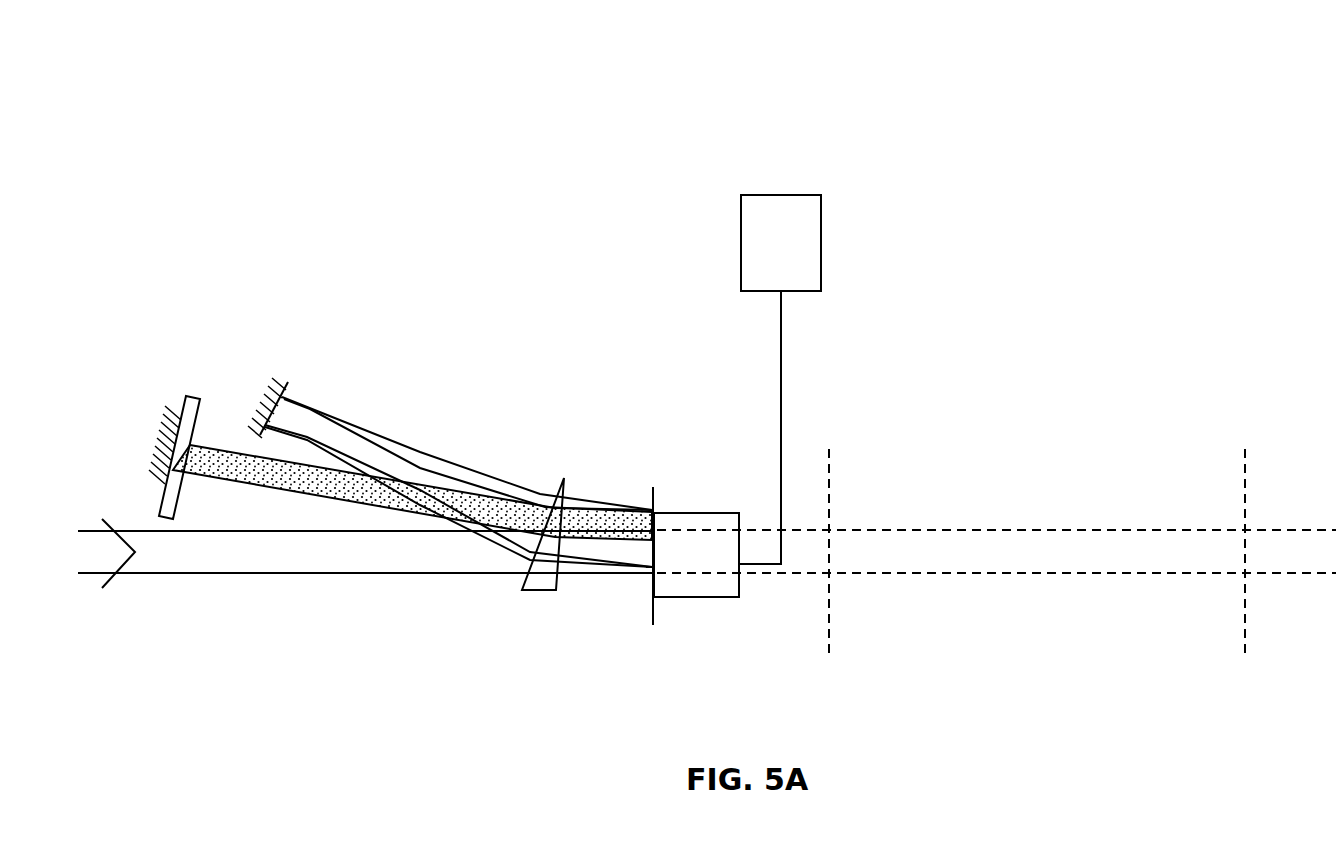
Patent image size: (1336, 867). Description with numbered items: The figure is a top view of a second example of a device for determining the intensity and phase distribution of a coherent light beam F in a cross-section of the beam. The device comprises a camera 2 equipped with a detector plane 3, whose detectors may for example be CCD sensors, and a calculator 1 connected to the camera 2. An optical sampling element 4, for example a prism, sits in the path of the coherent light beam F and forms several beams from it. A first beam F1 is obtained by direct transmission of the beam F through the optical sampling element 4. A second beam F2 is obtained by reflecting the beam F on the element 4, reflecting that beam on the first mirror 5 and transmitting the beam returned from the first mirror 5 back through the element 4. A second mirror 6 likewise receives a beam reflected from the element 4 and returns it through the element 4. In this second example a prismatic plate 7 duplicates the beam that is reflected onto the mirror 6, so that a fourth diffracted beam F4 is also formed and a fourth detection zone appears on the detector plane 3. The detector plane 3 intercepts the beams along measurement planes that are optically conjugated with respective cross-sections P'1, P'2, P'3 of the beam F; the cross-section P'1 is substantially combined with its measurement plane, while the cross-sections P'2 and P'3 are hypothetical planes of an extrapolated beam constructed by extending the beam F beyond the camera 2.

The calculator 1 is at (821, 242).
The camera 2 is at (688, 597).
The detector plane 3 is at (655, 501).
The optical sampling element 4 is at (537, 593).
The first mirror 5 is at (265, 388).
The second mirror 6 is at (163, 445).
The prismatic plate 7 is at (185, 405).
The coherent light beam F is at (207, 558).
The first beam F1 is at (580, 557).
The second beam F2 is at (587, 507).
The fourth beam F4 is at (600, 508).
The first cross-section P'1 is at (614, 587).
The second cross-section P'2 is at (872, 554).
The third cross-section P'3 is at (1290, 554).